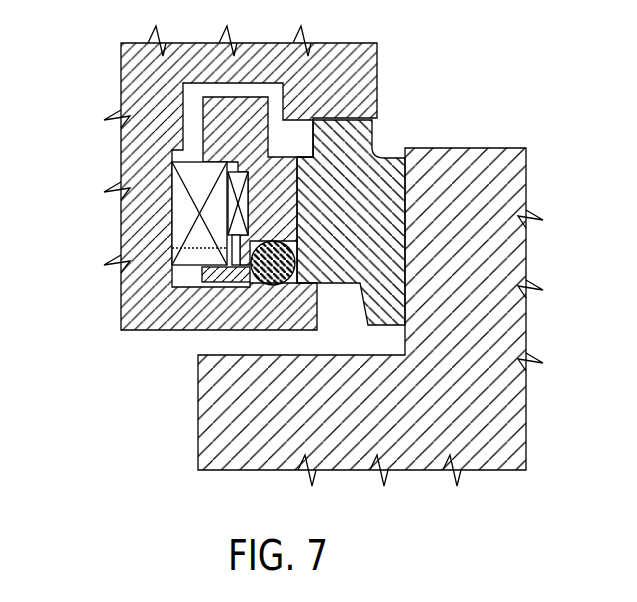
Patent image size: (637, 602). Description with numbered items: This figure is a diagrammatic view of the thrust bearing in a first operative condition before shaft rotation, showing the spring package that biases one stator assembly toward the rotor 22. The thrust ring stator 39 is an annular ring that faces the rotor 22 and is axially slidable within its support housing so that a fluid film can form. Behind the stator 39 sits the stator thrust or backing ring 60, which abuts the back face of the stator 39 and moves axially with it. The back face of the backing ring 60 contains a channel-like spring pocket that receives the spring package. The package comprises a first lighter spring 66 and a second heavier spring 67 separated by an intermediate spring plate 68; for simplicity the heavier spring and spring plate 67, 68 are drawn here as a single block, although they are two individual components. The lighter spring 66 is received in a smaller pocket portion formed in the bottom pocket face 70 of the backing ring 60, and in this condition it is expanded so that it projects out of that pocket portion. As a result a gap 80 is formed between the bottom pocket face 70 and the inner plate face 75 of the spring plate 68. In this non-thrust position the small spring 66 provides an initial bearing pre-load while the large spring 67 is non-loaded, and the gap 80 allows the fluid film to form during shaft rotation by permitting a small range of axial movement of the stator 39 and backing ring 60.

The rotor 22 is at (493, 253).
The thrust ring stator 39 is at (387, 194).
The backing ring 60 is at (280, 217).
The first lighter spring 66 is at (250, 199).
The second heavier spring 67 is at (130, 153).
The intermediate spring plate 68 is at (191, 168).
The bottom pocket face 70 is at (240, 278).
The inner plate face 75 is at (232, 258).
The gap 80 is at (190, 285).